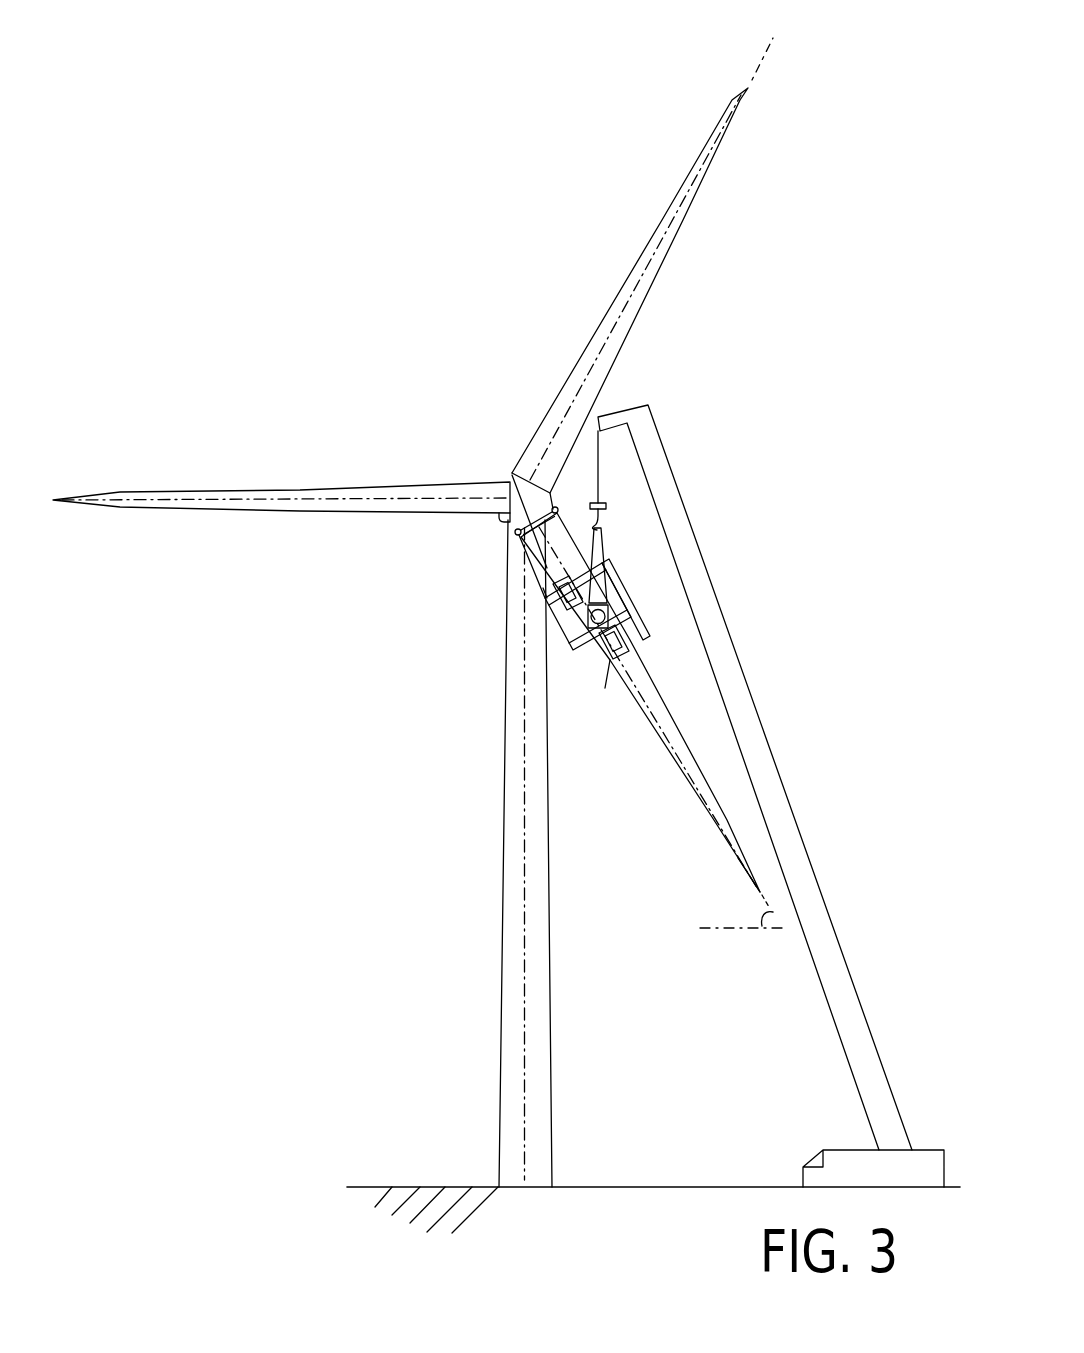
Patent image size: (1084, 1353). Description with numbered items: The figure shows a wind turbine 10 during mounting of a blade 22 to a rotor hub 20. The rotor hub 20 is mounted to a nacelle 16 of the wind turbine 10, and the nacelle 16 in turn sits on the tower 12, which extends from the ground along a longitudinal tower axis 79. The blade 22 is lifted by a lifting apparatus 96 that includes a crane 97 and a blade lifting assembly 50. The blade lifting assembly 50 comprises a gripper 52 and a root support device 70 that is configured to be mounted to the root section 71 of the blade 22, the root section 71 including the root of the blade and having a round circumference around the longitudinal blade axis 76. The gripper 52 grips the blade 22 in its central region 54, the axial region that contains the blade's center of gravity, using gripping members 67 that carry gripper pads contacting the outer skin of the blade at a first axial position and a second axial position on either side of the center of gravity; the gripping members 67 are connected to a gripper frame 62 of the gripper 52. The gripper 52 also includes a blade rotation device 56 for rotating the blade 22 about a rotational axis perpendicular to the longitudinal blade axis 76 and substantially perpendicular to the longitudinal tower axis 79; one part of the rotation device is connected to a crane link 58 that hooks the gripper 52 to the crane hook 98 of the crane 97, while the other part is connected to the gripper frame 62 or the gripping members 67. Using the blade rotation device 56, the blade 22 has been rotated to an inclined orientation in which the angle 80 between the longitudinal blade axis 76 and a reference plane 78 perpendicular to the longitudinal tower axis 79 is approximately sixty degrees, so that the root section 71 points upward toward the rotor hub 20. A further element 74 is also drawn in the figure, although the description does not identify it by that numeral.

The wind turbine 10 is at (365, 383).
The tower 12 is at (502, 820).
The nacelle 16 is at (510, 467).
The rotor hub 20 is at (510, 470).
The blade 22 is at (687, 783).
The blade lifting assembly 50 is at (652, 556).
The gripper 52 is at (645, 606).
The central region 54 is at (638, 646).
The blade rotation device 56 is at (552, 645).
The crane link 58 is at (602, 547).
The gripper frame 62 is at (592, 652).
The gripping members 67 is at (545, 602).
The root support device 70 is at (512, 475).
The root section 71 is at (515, 536).
The connecting rod 74 is at (543, 590).
The longitudinal blade axis 76 is at (740, 862).
The reference plane 78 is at (704, 932).
The longitudinal tower axis 79 is at (525, 907).
The angle 80 is at (767, 920).
The lifting apparatus 96 is at (701, 392).
The crane 97 is at (760, 720).
The crane hook 98 is at (605, 508).